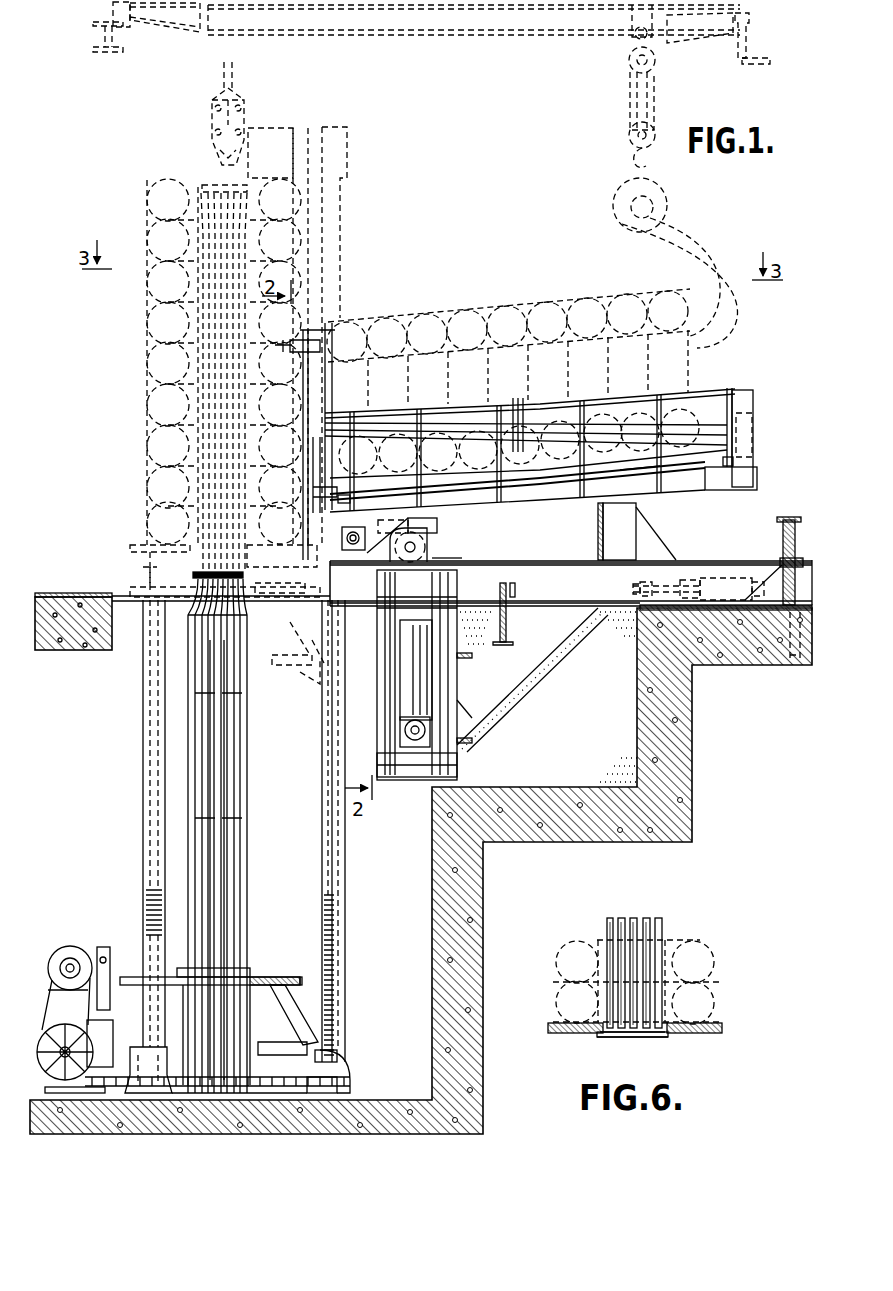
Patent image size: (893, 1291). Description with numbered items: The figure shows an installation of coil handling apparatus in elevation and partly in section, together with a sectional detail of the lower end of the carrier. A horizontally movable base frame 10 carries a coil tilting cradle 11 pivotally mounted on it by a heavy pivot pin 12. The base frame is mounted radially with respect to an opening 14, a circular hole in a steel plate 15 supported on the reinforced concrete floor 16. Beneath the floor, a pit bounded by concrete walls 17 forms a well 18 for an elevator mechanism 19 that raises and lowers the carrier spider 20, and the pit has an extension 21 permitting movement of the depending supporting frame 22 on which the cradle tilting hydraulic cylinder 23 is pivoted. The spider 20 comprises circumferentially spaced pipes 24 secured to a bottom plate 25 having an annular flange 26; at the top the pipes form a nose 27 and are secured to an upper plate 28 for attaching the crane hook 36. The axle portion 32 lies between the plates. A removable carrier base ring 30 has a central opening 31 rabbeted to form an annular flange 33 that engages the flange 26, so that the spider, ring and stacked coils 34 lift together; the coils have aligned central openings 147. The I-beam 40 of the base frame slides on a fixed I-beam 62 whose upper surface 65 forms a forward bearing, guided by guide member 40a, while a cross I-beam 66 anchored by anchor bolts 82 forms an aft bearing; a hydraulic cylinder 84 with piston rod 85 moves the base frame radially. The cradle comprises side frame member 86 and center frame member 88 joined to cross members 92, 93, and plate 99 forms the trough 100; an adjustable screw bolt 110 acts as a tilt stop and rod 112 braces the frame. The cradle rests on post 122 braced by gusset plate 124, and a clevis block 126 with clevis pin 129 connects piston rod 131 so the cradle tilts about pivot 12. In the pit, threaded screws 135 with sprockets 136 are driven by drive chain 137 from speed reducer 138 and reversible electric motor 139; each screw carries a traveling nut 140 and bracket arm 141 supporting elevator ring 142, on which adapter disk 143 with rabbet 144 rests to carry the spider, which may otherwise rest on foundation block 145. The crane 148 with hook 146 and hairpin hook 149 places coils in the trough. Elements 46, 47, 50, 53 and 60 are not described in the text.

In FIG. 1, the base frame 10 is at (550, 558).
In FIG. 1, the cradle 11 is at (725, 388).
In FIG. 1, the pivot pin 12 is at (352, 548).
In FIG. 1, the opening 14 is at (125, 604).
In FIG. 1, the steel plate 15 is at (62, 598).
In FIG. 1, the reinforced concrete floor 16 is at (72, 653).
In FIG. 1, the concrete walls 17 is at (470, 1008).
In FIG. 1, the well 18 is at (422, 918).
In FIG. 1, the elevator mechanism 19 is at (350, 978).
In FIG. 1, the carrier spider 20 is at (250, 786).
In FIG. 1, the extension 21 is at (558, 785).
In FIG. 1, the supporting frame 22 is at (460, 702).
In FIG. 1, the cradle tilting hydraulic cylinder 23 is at (400, 660).
In FIG. 1, the pipes 24 is at (212, 868).
In FIG. 6, the pipes 24 is at (645, 918).
In FIG. 1, the bottom plate 25 is at (210, 986).
In FIG. 6, the bottom plate 25 is at (634, 1038).
In FIG. 1, the annular flange 26 is at (246, 970).
In FIG. 6, the annular flange 26 is at (668, 1038).
In FIG. 1, the nose 27 is at (246, 588).
In FIG. 1, the upper plate 28 is at (195, 572).
In FIG. 1, the carrier base ring 30 is at (318, 330).
In FIG. 6, the carrier base ring 30 is at (572, 1034).
In FIG. 6, the central opening 31 is at (664, 1024).
In FIG. 1, the axle portion 32 is at (249, 716).
In FIG. 6, the axle portion 32 is at (662, 925).
In FIG. 6, the annular flange 33 is at (600, 1038).
In FIG. 1, the coils 34 is at (152, 236).
In FIG. 6, the coils 34 is at (714, 996).
In FIG. 1, the hook 36 is at (212, 126).
In FIG. 1, the I-beam 40 is at (512, 560).
In FIG. 1, the guide member 40a is at (505, 590).
In FIG. 1, the carriage frame 46 is at (400, 690).
In FIG. 1, the guide tab 47 is at (446, 686).
In FIG. 1, the carriage base 50 is at (418, 780).
In FIG. 1, the roller 53 is at (405, 736).
In FIG. 1, the diagonal brace 60 is at (528, 668).
In FIG. 1, the I-beam 62 is at (500, 630).
In FIG. 1, the upper surface 65 is at (515, 600).
In FIG. 1, the cross I-beam 66 is at (784, 532).
In FIG. 1, the anchor bolts 82 is at (795, 662).
In FIG. 1, the hydraulic cylinder 84 is at (726, 578).
In FIG. 1, the piston rod 85 is at (682, 582).
In FIG. 1, the side frame member 86 is at (640, 466).
In FIG. 1, the center frame member 88 is at (700, 490).
In FIG. 1, the cross member 92 is at (734, 461).
In FIG. 1, the cross member 93 is at (351, 500).
In FIG. 1, the steel plate 99 is at (746, 402).
In FIG. 1, the trough 100 is at (588, 404).
In FIG. 1, the adjustable screw bolt 110 is at (280, 340).
In FIG. 1, the rod 112 is at (514, 410).
In FIG. 1, the post 122 is at (599, 530).
In FIG. 1, the gusset plate 124 is at (639, 531).
In FIG. 1, the clevis block 126 is at (437, 523).
In FIG. 1, the clevis pin 129 is at (416, 547).
In FIG. 1, the piston rod 131 is at (452, 558).
In FIG. 1, the threaded screws 135 is at (145, 908).
In FIG. 1, the sprockets 136 is at (135, 1096).
In FIG. 1, the sprocket drive chain 137 is at (276, 1078).
In FIG. 1, the speed reducer 138 is at (120, 1030).
In FIG. 1, the reversible electric motor 139 is at (69, 946).
In FIG. 1, the traveling nut 140 is at (322, 683).
In FIG. 1, the bracket arm 141 is at (295, 630).
In FIG. 1, the elevator ring 142 is at (290, 1040).
In FIG. 1, the adapter disk 143 is at (280, 598).
In FIG. 1, the rabbet 144 is at (286, 977).
In FIG. 1, the foundation block 145 is at (205, 1096).
In FIG. 1, the hook 146 is at (632, 165).
In FIG. 1, the central openings 147 is at (198, 184).
In FIG. 1, the crane 148 is at (628, 62).
In FIG. 1, the hairpin hook 149 is at (662, 246).